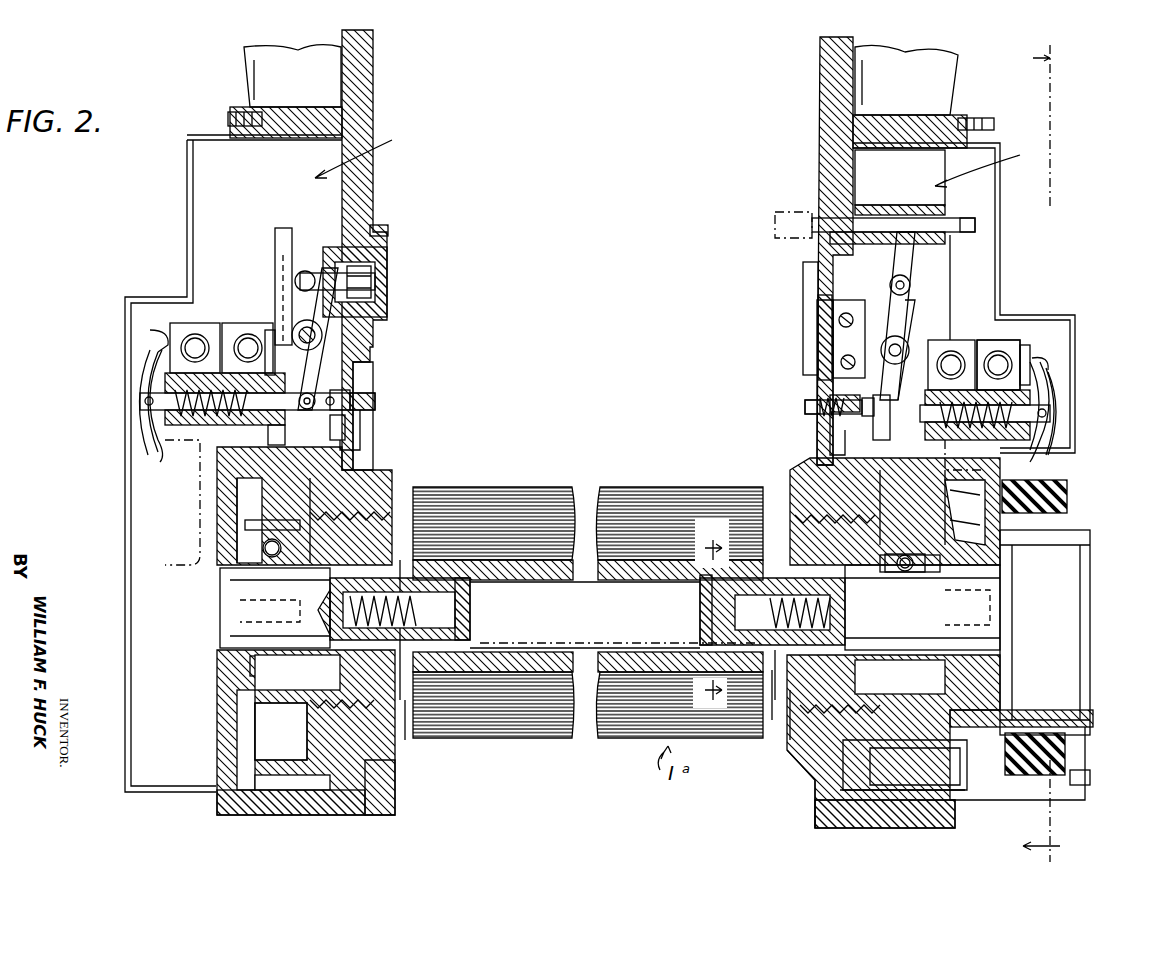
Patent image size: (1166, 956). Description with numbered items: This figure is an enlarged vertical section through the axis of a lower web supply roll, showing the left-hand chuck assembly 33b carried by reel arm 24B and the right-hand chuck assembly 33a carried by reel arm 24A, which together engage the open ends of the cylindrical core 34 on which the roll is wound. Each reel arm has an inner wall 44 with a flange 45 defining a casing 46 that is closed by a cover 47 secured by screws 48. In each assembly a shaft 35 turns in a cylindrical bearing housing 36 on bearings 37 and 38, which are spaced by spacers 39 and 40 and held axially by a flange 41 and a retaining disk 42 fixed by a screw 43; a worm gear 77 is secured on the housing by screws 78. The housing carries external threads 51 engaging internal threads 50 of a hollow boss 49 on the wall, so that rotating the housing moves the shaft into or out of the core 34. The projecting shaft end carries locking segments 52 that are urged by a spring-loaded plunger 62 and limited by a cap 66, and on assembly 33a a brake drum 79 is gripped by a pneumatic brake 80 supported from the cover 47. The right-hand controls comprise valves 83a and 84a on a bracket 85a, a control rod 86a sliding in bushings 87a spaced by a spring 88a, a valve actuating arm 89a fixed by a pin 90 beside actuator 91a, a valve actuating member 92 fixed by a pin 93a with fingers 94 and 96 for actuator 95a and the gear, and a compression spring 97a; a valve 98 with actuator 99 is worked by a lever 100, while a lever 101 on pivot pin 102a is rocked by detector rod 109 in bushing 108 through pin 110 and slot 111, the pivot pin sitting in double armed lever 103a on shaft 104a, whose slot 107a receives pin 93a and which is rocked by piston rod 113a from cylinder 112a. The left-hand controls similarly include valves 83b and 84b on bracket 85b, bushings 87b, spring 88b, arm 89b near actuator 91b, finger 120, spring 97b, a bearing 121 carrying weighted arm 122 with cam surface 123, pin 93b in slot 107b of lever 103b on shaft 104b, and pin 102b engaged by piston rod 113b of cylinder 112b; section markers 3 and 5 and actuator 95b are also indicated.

The reel arm 24B is at (376, 66).
The reel arm 24A is at (820, 102).
The screw 48 is at (238, 112).
The cover 47 is at (187, 198).
The casing 46 is at (676, 154).
The inner wall 44 is at (378, 202).
The valve actuating arm 122 is at (286, 228).
The cam surface 123 is at (276, 270).
The pin 102b is at (315, 272).
The cylinder 112b is at (372, 292).
The piston rod 113b is at (356, 282).
The lever 103b is at (320, 362).
The shaft 104b is at (322, 336).
The bearing 121 is at (342, 392).
The slot 107b is at (362, 396).
The compression spring 97b is at (378, 402).
The valve actuating arm 89b is at (376, 406).
The pin 93b is at (346, 430).
The finger 120 is at (375, 458).
The valve 83b is at (190, 330).
The valve 84b is at (224, 325).
The bracket 95b is at (262, 332).
The actuator 91b is at (150, 336).
The pin 90 is at (140, 403).
The bushing 87b is at (165, 420).
The bracket 85b is at (148, 452).
The spring 88b is at (165, 457).
The hollow boss 49 is at (372, 482).
The retaining disk 42 is at (222, 592).
The shaft 35 is at (230, 632).
The spacer 39 is at (250, 666).
The worm gear 77 is at (240, 712).
The external threads 51 is at (622, 620).
The flange 41 is at (591, 630).
The plunger 62 is at (581, 611).
The locking segments 52 is at (480, 590).
The cap 66 is at (470, 618).
The core 34 is at (640, 578).
The left-hand chuck assembly 33b is at (409, 730).
The internal threads 50 is at (368, 777).
The bearing housing 36 is at (340, 762).
The section line 5 is at (711, 613).
The section line 3 is at (1030, 448).
The finger 94 is at (1040, 318).
The bushing 108 is at (896, 205).
The pin 110 is at (952, 218).
The detector rod 109 is at (808, 215).
The slot 111 is at (968, 225).
The lever 101 is at (896, 258).
The actuating lever 100 is at (893, 289).
The pivot pin 102a is at (915, 292).
The double armed lever 103a is at (918, 332).
The shaft 104a is at (892, 358).
The piston rod 113a is at (828, 294).
The cylinder 112a is at (825, 312).
The actuator 99 is at (838, 324).
The valve 98 is at (842, 348).
The slot 107a is at (830, 400).
The valve actuating member 92 is at (820, 406).
The control rod 86a is at (808, 412).
The compression spring 97a is at (835, 422).
The finger 96 is at (830, 442).
The pin 93a is at (882, 428).
The bushing 87a is at (926, 428).
The spring 88a is at (947, 442).
The valve 84a is at (978, 342).
The valve 83a is at (1012, 342).
The actuator 95a is at (1035, 318).
The actuator 91a is at (1046, 367).
The bracket 85a is at (1052, 388).
The valve actuating arm 89a is at (1052, 432).
The spacer 40 is at (916, 582).
The bearing 38 is at (910, 574).
The screw 43 is at (1010, 616).
The brake drum 79 is at (1090, 737).
The screw 78 is at (1017, 627).
The pneumatic brake 80 is at (1082, 768).
The bearing 37 is at (776, 730).
The right-hand chuck assembly 33a is at (796, 750).
The flange 45 is at (880, 802).